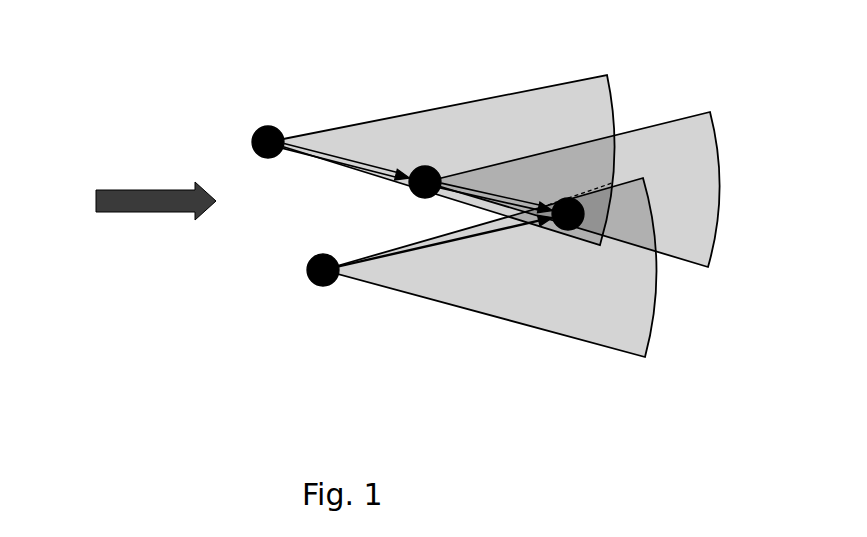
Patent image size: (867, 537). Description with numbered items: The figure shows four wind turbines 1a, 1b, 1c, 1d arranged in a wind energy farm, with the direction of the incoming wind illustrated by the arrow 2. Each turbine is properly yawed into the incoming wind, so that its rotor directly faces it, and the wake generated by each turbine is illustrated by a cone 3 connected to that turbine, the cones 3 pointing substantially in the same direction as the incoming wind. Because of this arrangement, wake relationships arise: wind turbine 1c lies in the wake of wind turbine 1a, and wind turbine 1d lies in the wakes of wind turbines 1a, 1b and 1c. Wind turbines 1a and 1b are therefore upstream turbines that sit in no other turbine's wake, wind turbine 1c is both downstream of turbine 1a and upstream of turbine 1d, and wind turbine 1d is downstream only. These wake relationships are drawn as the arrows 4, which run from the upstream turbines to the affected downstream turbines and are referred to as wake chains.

The wind turbine 1a is at (256, 128).
The wind turbine 1b is at (314, 285).
The wind turbine 1c is at (412, 194).
The wind turbine 1d is at (578, 200).
The arrow 2 is at (122, 190).
The cones 3 is at (457, 128).
The arrows 4 is at (340, 160).